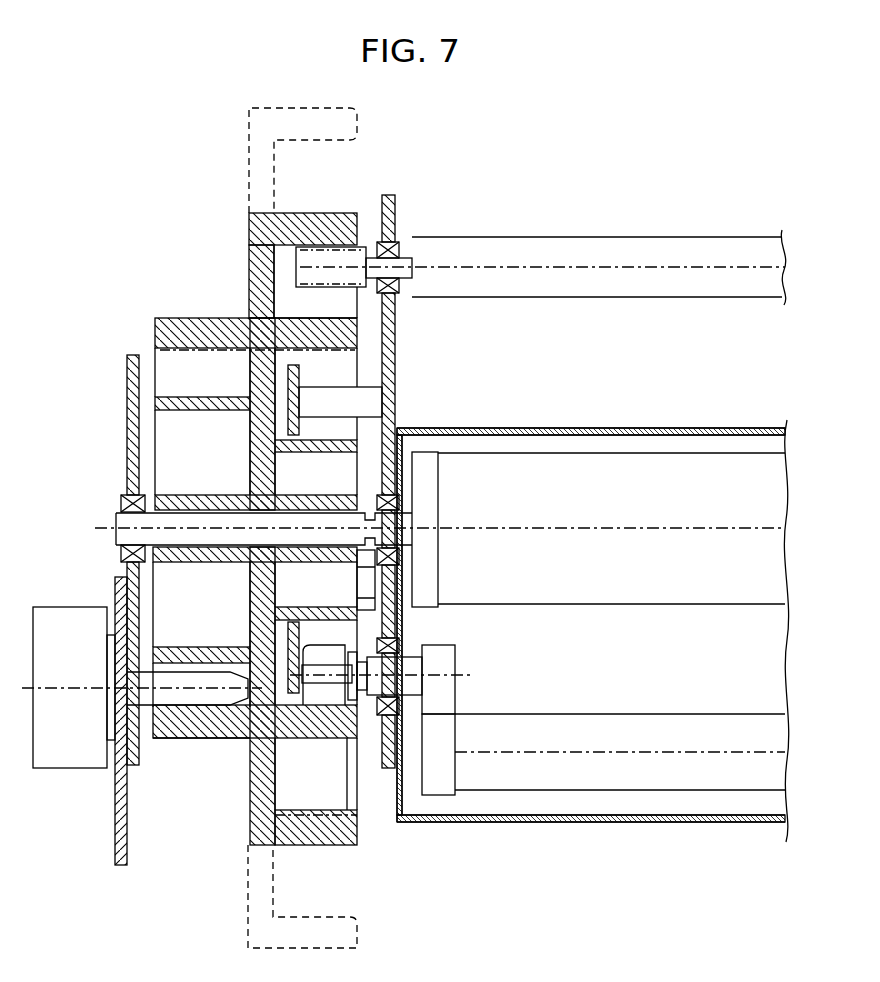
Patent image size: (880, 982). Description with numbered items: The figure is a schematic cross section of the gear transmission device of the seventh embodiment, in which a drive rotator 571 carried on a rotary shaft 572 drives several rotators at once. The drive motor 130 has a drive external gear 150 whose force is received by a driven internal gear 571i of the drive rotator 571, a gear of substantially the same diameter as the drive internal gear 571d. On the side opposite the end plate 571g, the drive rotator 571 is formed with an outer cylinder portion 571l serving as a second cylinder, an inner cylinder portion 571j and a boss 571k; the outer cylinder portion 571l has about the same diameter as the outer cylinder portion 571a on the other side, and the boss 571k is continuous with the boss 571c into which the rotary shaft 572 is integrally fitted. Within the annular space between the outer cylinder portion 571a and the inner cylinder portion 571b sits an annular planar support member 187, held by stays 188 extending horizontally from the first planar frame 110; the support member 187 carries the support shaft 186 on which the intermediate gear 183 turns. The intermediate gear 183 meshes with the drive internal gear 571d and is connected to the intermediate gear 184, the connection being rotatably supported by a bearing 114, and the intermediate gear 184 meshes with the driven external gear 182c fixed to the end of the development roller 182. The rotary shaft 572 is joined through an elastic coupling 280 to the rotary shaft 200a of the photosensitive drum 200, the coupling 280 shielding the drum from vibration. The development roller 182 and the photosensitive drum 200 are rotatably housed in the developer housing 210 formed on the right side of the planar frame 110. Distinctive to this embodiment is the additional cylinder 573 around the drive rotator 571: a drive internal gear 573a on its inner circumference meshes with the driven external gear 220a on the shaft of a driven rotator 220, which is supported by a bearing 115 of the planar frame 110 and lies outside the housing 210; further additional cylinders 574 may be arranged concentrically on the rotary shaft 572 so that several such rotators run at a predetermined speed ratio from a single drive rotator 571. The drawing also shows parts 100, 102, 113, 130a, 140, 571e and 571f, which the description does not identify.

The side plate 100 is at (128, 437).
The bearing 102 is at (121, 503).
The first planar frame 110 is at (395, 384).
The bearing 113 is at (400, 500).
The bearing 114 is at (398, 648).
The bearing 115 is at (400, 290).
The drive motor 130 is at (68, 607).
The motor shaft 130a is at (146, 702).
The bracket plate 140 is at (118, 826).
The drive external gear 150 is at (196, 702).
The development roller 182 is at (644, 730).
The driven external gear 182c is at (437, 782).
The intermediate gear 183 is at (327, 645).
The intermediate gear 184 is at (448, 662).
The support shaft 186 is at (335, 684).
The annular planar support member 187 is at (287, 372).
The stays 188 is at (320, 382).
The photosensitive drum 200 is at (707, 455).
The rotary shaft 200a is at (410, 540).
The developer housing 210 is at (590, 436).
The driven rotator 220 is at (643, 250).
The driven external gear 220a is at (346, 288).
The coupling 280 is at (372, 527).
The drive rotator 571 is at (265, 505).
The outer cylinder portion 571a is at (350, 332).
The inner cylinder portion 571b is at (352, 450).
The boss 571c is at (288, 500).
The drive internal gear 571d is at (298, 706).
The holder inner surface 571e is at (350, 351).
The holder partition 571f is at (352, 440).
The end plate 571g is at (262, 452).
The driven internal gear 571i is at (176, 356).
The inner cylinder portion 571j is at (175, 404).
The boss 571k is at (204, 497).
The outer cylinder portion 571l is at (158, 330).
The rotary shaft 572 is at (118, 538).
The additional cylinder 573 is at (348, 228).
The drive internal gear 573a is at (283, 248).
The additional cylinders 574 is at (358, 127).